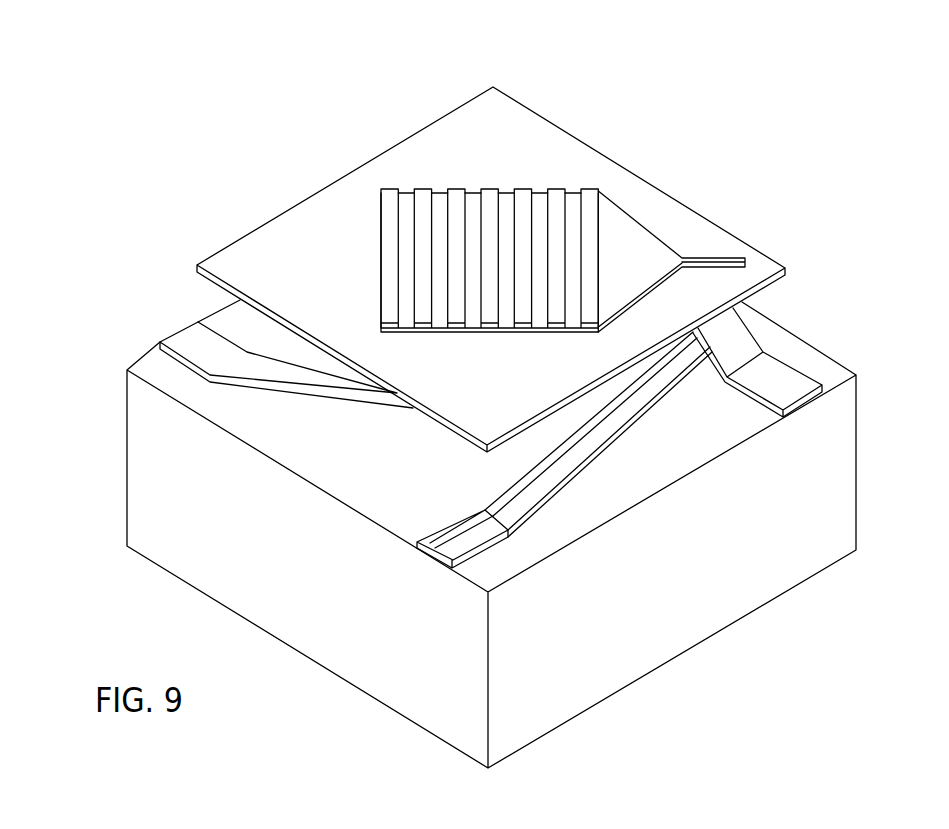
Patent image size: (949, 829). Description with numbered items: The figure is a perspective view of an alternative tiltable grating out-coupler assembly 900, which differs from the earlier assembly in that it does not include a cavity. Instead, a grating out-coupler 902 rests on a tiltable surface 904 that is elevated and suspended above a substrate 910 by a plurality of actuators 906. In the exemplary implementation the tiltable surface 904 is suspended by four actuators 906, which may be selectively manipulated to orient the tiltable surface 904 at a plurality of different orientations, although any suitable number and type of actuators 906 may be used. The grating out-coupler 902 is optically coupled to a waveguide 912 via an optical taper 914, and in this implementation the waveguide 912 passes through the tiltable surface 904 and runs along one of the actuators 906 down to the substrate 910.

The grating out-coupler assembly 900 is at (784, 90).
The grating out-coupler 902 is at (385, 205).
The tiltable surface 904 is at (530, 132).
The actuators 906 is at (200, 350).
The substrate 910 is at (840, 462).
The waveguide 912 is at (587, 412).
The optical taper 914 is at (638, 257).